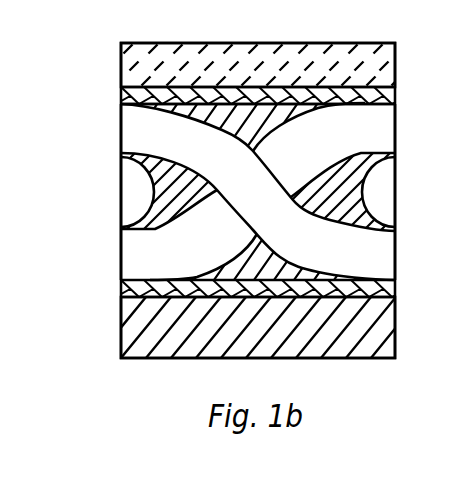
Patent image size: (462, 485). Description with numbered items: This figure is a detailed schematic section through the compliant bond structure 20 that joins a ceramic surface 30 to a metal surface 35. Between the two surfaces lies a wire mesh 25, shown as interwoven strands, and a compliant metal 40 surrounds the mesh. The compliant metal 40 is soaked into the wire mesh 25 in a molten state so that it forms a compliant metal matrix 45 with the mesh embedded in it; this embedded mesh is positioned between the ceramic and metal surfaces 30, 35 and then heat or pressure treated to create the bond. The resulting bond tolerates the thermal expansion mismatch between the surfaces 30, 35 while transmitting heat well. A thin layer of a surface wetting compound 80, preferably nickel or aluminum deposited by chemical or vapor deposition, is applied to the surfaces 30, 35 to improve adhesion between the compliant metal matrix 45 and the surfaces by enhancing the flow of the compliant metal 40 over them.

The compliant bond structure 20 is at (93, 158).
The wire mesh 25 is at (383, 132).
The ceramic surface 30 is at (385, 63).
The metal surface 35 is at (383, 330).
The compliant metal 40 is at (263, 122).
The compliant metal matrix 45 is at (243, 101).
The surface wetting compound 80 is at (393, 92).